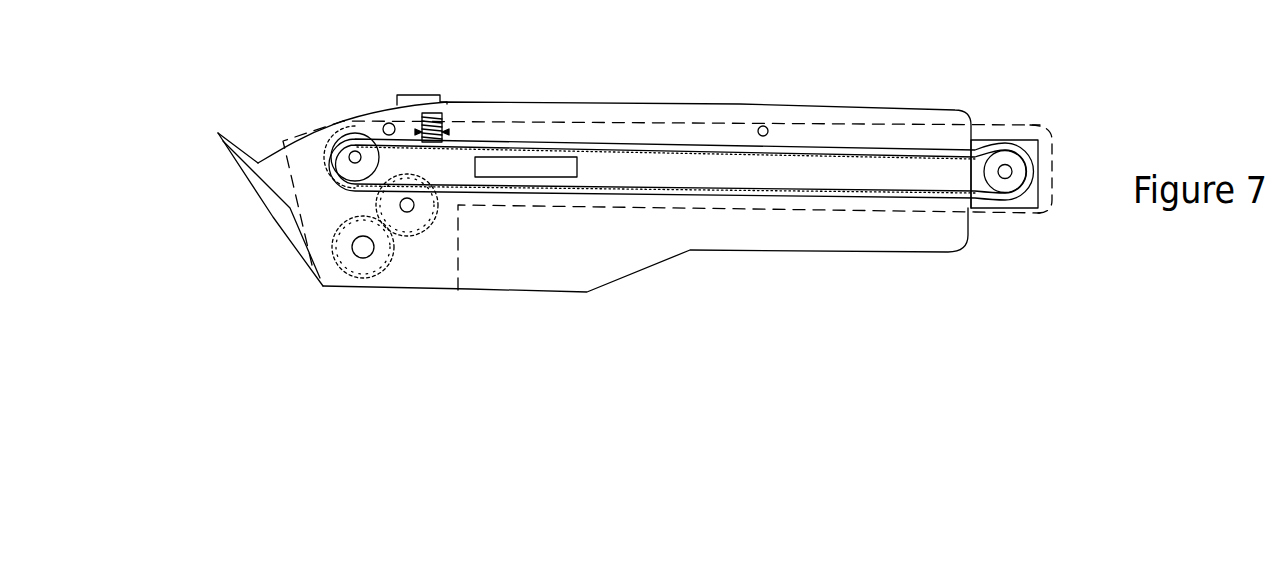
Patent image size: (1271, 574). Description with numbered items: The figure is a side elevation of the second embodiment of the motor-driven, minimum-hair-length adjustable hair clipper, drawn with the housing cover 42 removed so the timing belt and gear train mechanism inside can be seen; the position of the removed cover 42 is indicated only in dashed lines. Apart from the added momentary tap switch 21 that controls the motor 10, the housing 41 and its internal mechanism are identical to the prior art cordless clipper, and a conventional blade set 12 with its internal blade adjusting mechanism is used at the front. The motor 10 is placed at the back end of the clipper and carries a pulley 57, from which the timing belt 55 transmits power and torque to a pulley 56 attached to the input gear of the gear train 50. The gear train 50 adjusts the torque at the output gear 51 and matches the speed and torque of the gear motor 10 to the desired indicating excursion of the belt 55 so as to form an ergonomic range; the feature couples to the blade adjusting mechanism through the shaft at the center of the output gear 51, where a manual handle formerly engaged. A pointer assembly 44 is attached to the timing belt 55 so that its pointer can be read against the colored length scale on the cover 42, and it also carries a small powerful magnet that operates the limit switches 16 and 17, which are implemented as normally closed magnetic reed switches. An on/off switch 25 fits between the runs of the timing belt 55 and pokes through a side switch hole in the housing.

The motor 10 is at (1025, 149).
The blade set 12 is at (212, 145).
The limit switch 16 is at (775, 130).
The limit switch 17 is at (372, 117).
The momentary switch 21 is at (413, 92).
The on/off switch 25 is at (563, 167).
The housing 41 is at (830, 103).
The housing cover 42 is at (1002, 123).
The pointer assembly 44 is at (440, 113).
The gear train 50 is at (430, 228).
The output gear 51 is at (355, 278).
The timing belt 55 is at (885, 200).
The pulley 56 is at (335, 183).
The pulley 57 is at (1012, 208).